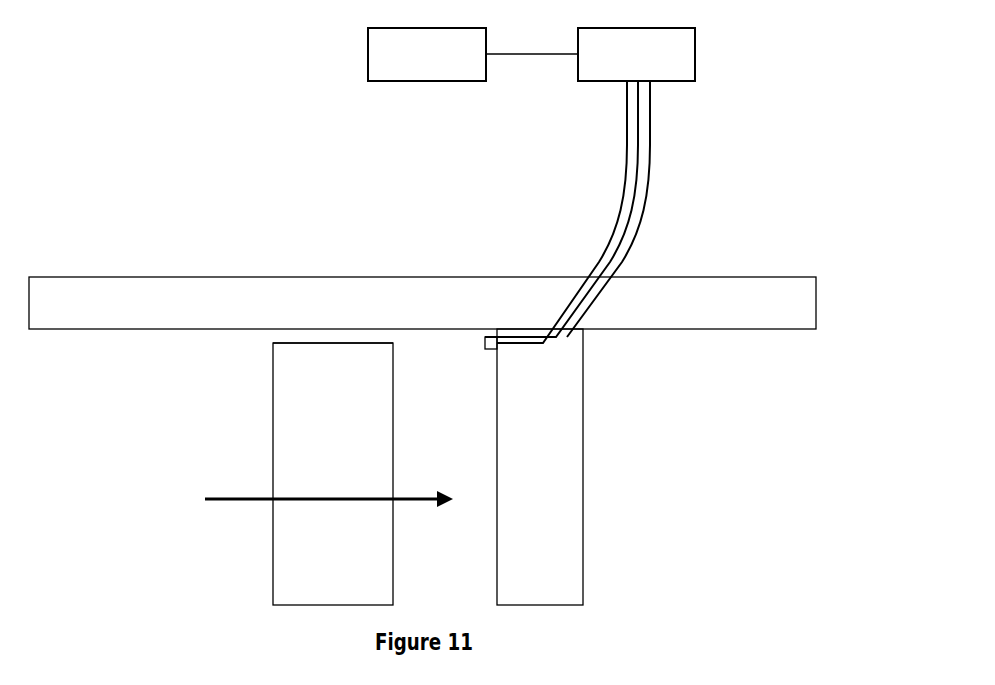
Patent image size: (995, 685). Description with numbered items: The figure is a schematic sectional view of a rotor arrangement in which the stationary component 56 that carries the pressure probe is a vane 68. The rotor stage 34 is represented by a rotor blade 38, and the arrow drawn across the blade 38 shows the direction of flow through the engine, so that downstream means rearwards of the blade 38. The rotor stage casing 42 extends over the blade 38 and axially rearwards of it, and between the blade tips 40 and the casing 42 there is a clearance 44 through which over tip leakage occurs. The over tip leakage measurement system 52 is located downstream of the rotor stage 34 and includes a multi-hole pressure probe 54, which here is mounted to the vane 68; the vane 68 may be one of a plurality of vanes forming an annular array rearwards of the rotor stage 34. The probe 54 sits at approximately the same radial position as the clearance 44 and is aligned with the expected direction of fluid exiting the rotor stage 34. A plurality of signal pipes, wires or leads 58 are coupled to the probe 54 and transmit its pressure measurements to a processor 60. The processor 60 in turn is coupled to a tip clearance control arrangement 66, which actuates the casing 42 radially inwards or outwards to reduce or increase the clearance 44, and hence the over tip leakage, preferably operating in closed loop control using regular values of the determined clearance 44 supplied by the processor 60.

The rotor stage 34 is at (331, 235).
The rotor blade 38 is at (291, 404).
The blade tip 40 is at (338, 344).
The rotor stage casing 42 is at (184, 297).
The clearance 44 is at (268, 342).
The over tip leakage measurement system 52 is at (453, 250).
The multi-hole pressure probe 54 is at (493, 345).
The stationary component 56 is at (532, 295).
The signal pipes, wires or leads 58 is at (663, 197).
The processor 60 is at (622, 69).
The tip clearance control arrangement 66 is at (413, 69).
The vane 68 is at (570, 497).